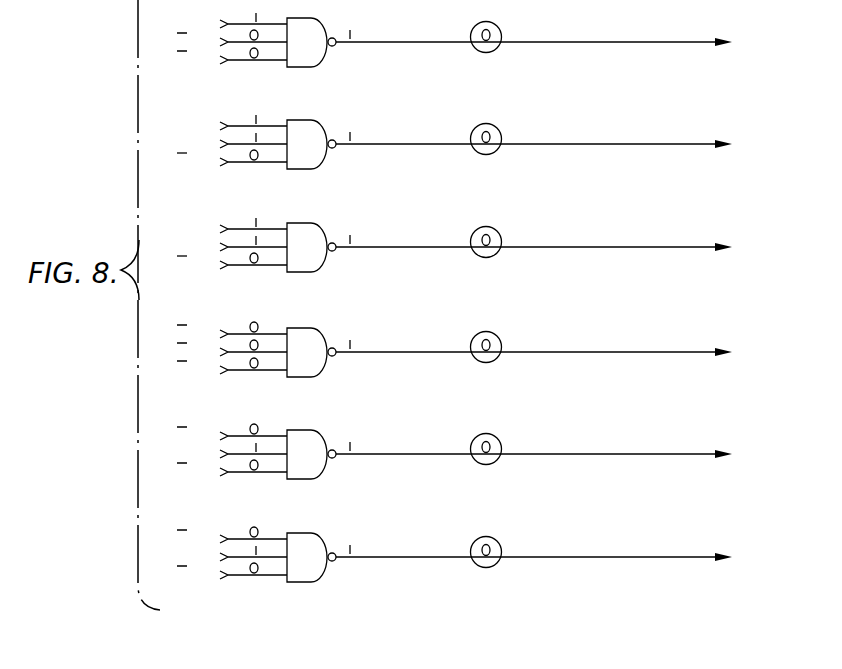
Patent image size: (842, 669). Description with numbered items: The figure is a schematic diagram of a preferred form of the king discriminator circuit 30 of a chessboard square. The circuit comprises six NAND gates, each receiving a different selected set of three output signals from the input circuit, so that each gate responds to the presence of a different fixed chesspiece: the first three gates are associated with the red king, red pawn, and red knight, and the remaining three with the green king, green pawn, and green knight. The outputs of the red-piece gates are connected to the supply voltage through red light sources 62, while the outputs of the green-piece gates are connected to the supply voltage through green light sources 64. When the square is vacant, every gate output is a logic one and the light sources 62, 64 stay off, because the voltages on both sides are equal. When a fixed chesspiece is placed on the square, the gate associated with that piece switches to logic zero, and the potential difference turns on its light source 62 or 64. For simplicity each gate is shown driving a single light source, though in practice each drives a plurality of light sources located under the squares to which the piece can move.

The king discriminator circuit 30 is at (455, 594).
The red light source 62 is at (497, 28).
The green light source 64 is at (497, 338).